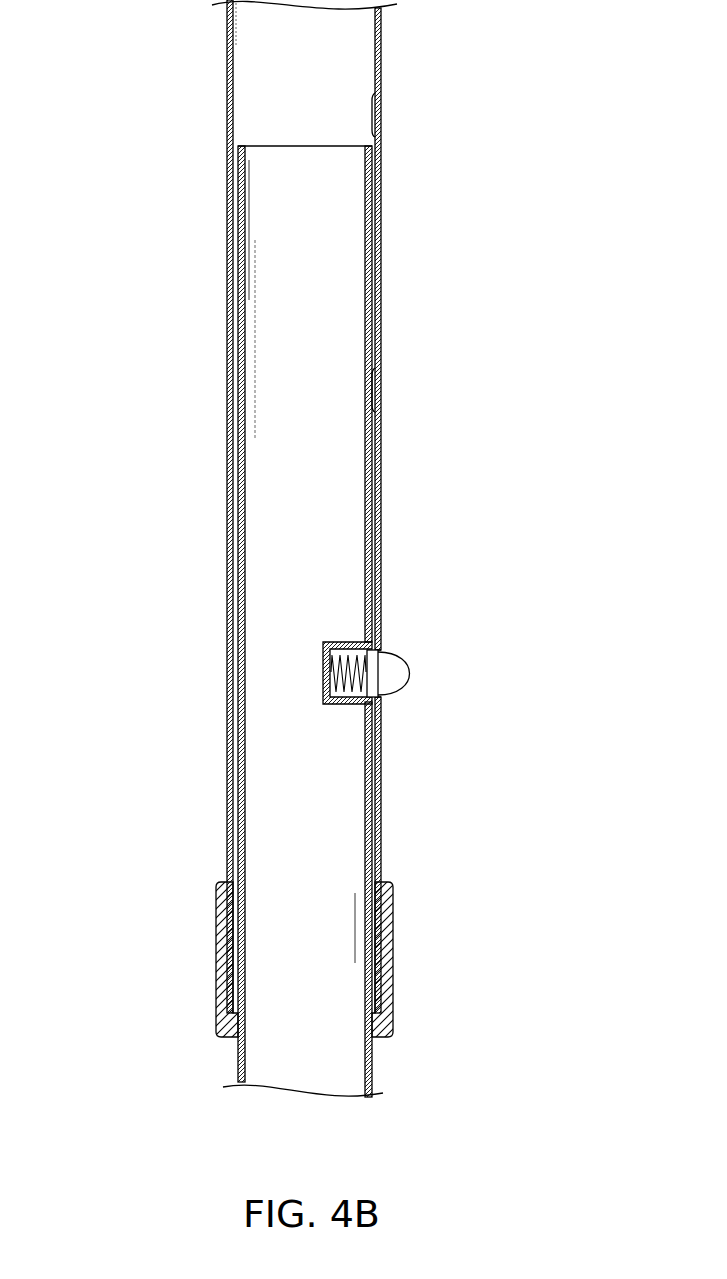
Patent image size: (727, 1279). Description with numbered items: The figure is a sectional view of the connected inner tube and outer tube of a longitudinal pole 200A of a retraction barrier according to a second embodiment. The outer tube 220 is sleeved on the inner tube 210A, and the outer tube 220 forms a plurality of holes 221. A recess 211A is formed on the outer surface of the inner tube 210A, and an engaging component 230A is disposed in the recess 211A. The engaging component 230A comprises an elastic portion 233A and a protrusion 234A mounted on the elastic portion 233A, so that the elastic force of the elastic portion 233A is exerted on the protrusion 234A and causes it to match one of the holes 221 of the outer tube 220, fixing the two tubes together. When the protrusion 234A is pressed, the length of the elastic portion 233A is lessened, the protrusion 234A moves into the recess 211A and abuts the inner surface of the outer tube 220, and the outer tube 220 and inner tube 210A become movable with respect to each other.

The longitudinal pole 200A is at (194, 248).
The outer tube 220 is at (380, 60).
The holes 221 is at (373, 392).
The inner tube 210A is at (333, 160).
The engaging component 230A is at (424, 673).
The recess 211A is at (337, 708).
The elastic portion 233A is at (330, 672).
The protrusion 234A is at (398, 686).